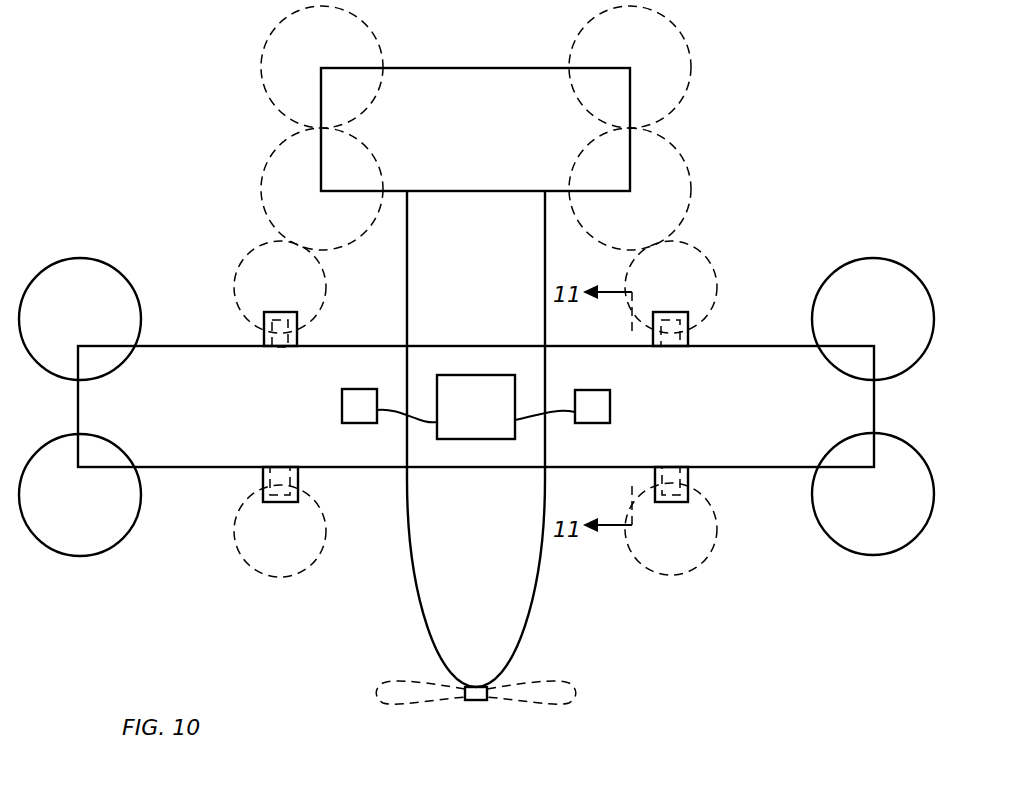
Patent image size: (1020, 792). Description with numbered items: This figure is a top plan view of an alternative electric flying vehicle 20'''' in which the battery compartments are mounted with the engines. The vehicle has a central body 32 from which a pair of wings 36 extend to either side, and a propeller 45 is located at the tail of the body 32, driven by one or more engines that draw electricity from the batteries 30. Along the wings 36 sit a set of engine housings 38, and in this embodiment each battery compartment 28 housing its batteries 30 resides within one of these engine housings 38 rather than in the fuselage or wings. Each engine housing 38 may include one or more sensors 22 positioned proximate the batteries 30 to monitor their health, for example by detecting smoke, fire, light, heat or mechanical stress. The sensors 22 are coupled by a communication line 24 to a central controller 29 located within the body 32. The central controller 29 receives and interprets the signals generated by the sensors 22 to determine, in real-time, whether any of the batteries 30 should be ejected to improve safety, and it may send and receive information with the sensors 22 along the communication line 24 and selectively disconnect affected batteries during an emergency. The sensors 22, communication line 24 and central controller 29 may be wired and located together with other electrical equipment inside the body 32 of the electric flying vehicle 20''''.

The electric flying vehicle 20'''' is at (406, 360).
The sensor 22 is at (342, 410).
The communication line 24 is at (397, 412).
The battery compartment 28 is at (264, 333).
The central controller 29 is at (475, 439).
The battery 30 is at (297, 333).
The body 32 is at (510, 617).
The wing 36 is at (171, 342).
The engine housing 38 is at (650, 512).
The propeller 45 is at (420, 683).